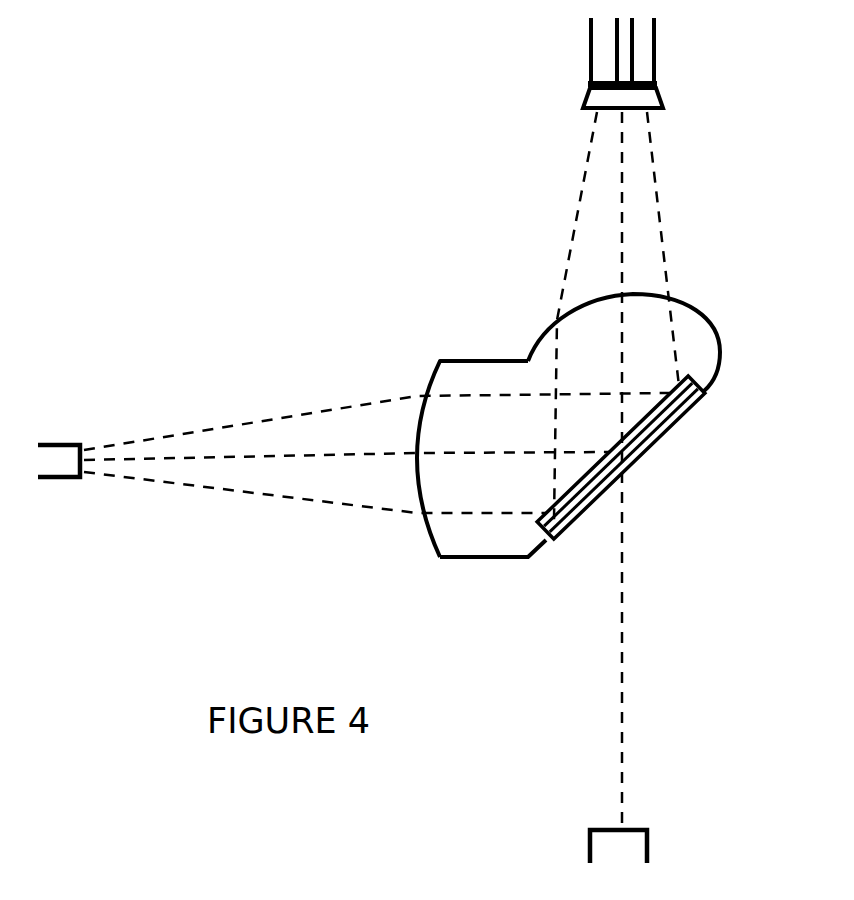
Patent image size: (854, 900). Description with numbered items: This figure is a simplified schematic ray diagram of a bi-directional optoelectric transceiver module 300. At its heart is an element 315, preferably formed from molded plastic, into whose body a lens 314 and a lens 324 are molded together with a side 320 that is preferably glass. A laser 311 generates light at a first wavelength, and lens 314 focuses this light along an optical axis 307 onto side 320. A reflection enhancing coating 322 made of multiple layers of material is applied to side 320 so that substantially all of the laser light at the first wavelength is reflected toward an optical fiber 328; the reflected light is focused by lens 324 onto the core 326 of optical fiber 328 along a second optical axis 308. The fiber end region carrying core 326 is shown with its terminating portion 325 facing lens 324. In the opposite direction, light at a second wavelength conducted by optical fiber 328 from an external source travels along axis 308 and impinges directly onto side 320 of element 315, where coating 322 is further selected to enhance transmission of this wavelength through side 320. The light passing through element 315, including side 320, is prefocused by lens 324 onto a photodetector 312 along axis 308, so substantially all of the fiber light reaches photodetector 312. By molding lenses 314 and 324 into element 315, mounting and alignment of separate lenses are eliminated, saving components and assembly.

The bi-directional optoelectric transceiver module 300 is at (309, 241).
The optical axis 307 is at (325, 526).
The optical axis 308 is at (690, 199).
The laser 311 is at (54, 443).
The photodetector 312 is at (650, 842).
The lens 314 is at (407, 368).
The element 315 is at (464, 590).
The side 320 is at (706, 388).
The reflection enhancing coating 322 is at (550, 511).
The lens 324 is at (702, 312).
The emitter base 325 is at (662, 98).
The core 326 is at (627, 69).
The optical fiber 328 is at (558, 64).